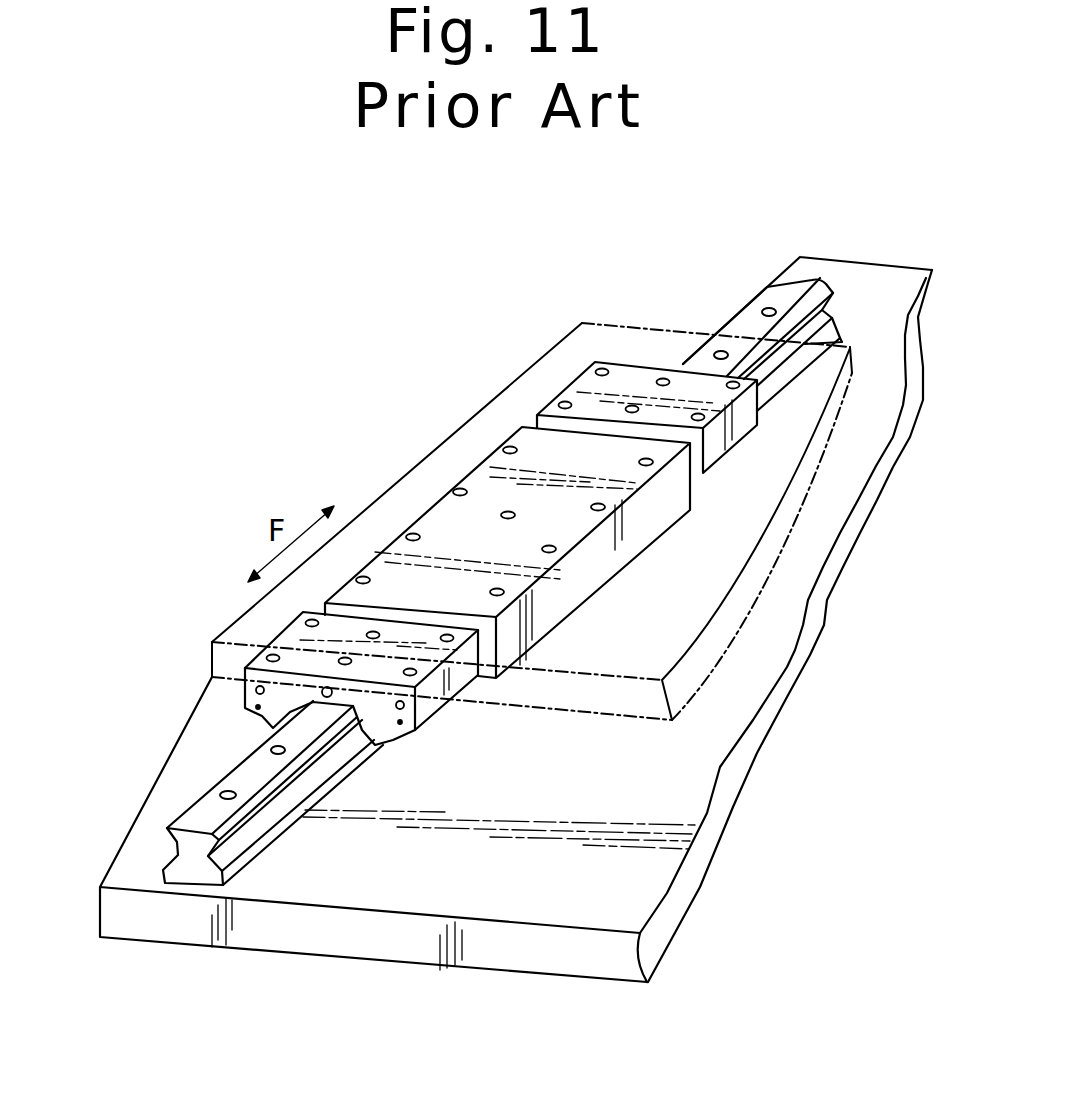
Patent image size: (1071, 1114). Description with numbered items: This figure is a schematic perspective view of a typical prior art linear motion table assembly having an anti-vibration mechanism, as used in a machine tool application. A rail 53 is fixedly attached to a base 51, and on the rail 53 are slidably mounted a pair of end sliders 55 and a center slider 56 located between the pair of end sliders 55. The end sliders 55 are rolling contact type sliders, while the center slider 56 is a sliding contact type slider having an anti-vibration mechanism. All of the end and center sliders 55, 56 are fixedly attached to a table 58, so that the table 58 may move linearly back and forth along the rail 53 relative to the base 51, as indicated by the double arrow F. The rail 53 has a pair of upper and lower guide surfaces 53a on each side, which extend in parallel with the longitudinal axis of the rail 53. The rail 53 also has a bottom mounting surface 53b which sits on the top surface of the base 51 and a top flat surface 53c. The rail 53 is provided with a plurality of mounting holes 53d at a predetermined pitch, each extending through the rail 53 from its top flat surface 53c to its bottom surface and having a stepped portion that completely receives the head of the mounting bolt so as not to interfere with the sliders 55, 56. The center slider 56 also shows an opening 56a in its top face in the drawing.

The base 51 is at (533, 958).
The rail 53 is at (208, 782).
The guide surfaces 53a is at (297, 768).
The bottom mounting surface 53b is at (197, 889).
The top flat surface 53c is at (207, 815).
The mounting holes 53d is at (763, 305).
The end sliders 55 is at (566, 380).
The center slider 56 is at (427, 501).
The table mounting hole 56a is at (504, 511).
The table 58 is at (640, 337).